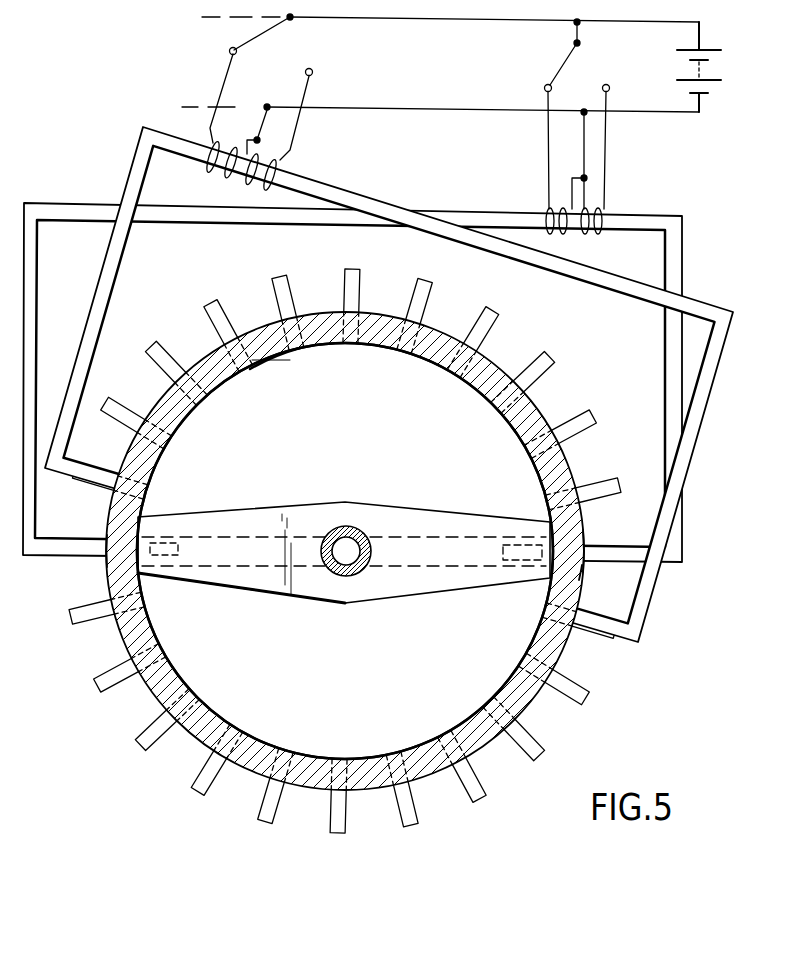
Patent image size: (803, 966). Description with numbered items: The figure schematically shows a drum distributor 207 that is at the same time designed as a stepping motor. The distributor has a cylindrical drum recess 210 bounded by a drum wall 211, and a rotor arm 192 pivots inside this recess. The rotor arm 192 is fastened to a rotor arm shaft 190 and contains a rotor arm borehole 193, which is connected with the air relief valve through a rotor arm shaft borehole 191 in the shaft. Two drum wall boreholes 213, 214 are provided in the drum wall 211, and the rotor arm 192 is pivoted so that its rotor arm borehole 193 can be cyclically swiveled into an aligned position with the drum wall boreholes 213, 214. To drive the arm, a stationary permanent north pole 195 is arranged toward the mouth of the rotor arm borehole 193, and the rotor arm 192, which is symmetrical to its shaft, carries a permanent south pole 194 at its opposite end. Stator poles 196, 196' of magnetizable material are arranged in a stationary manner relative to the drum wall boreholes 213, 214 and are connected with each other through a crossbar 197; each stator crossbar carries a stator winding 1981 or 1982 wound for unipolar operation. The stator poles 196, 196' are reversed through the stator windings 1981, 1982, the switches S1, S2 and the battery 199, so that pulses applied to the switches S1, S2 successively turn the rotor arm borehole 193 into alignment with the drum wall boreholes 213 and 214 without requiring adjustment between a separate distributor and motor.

The rotor arm shaft 190 is at (341, 576).
The rotor arm shaft borehole 191 is at (351, 563).
The rotor arm 192 is at (430, 573).
The rotor arm borehole 193 is at (255, 556).
The permanent south pole 194 is at (512, 545).
The permanent north pole 195 is at (173, 543).
The stator pole 196 is at (317, 551).
The stator pole 196' is at (600, 539).
The crossbar 197 is at (477, 216).
The stator winding 1981 is at (258, 158).
The stator winding 1982 is at (584, 196).
The battery 199 is at (704, 68).
The drum distributor 207 is at (128, 708).
The drum recess 210 is at (398, 446).
The drum wall 211 is at (268, 357).
The drum wall borehole 213 is at (118, 560).
The drum wall borehole 214 is at (575, 569).
The switch S1 is at (450, 38).
The switch S2 is at (440, 67).